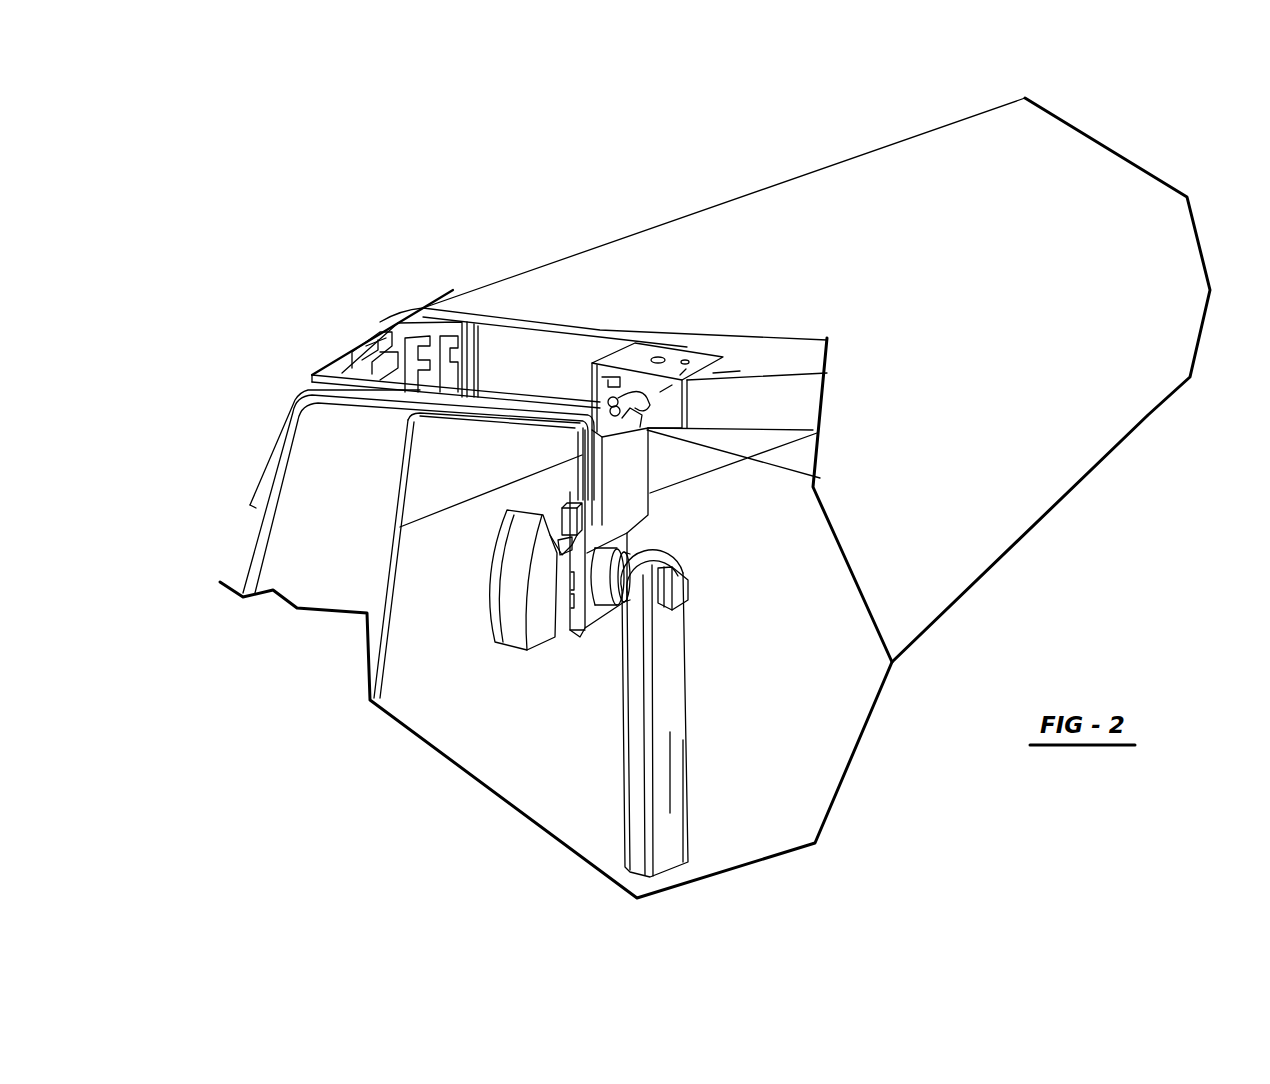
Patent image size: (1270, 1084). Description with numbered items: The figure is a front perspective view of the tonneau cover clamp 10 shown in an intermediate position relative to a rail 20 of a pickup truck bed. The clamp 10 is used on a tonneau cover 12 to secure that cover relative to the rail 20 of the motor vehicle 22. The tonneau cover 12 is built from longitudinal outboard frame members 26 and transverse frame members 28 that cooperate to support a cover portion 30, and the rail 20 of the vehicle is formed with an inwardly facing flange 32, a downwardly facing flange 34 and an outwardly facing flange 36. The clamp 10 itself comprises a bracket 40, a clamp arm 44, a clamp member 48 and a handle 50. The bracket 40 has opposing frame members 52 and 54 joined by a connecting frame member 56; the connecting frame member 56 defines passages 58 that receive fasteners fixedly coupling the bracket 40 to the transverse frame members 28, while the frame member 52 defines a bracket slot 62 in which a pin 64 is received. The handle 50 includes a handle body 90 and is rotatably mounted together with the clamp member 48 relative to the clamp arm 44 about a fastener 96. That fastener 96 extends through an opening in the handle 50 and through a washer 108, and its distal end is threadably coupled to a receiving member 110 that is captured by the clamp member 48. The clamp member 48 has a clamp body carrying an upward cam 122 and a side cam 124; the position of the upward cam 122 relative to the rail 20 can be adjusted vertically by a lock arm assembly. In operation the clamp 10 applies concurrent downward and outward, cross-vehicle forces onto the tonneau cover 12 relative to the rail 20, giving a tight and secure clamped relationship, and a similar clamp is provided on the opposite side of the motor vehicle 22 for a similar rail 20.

The tonneau cover clamp 10 is at (725, 553).
The tonneau cover 12 is at (776, 230).
The rail 20 is at (477, 440).
The motor vehicle 22 is at (248, 400).
The longitudinal outboard frame member 26 is at (380, 340).
The transverse frame member 28 is at (803, 400).
The cover portion 30 is at (1103, 253).
The inwardly facing flange 32 is at (430, 470).
The downwardly facing flange 34 is at (500, 445).
The outwardly facing flange 36 is at (564, 450).
The bracket 40 is at (700, 368).
The clamp arm 44 is at (627, 475).
The clamp member 48 is at (515, 633).
The handle 50 is at (675, 705).
The frame member 52 is at (665, 392).
The frame member 54 is at (740, 371).
The connecting frame member 56 is at (681, 373).
The passage 58 is at (658, 356).
The bracket slot 62 is at (650, 427).
The pin 64 is at (610, 378).
The handle body 90 is at (670, 660).
The fastener 96 is at (683, 590).
The washer 108 is at (610, 560).
The receiving member 110 is at (608, 590).
The upward cam 122 is at (508, 572).
The side cam 124 is at (542, 597).